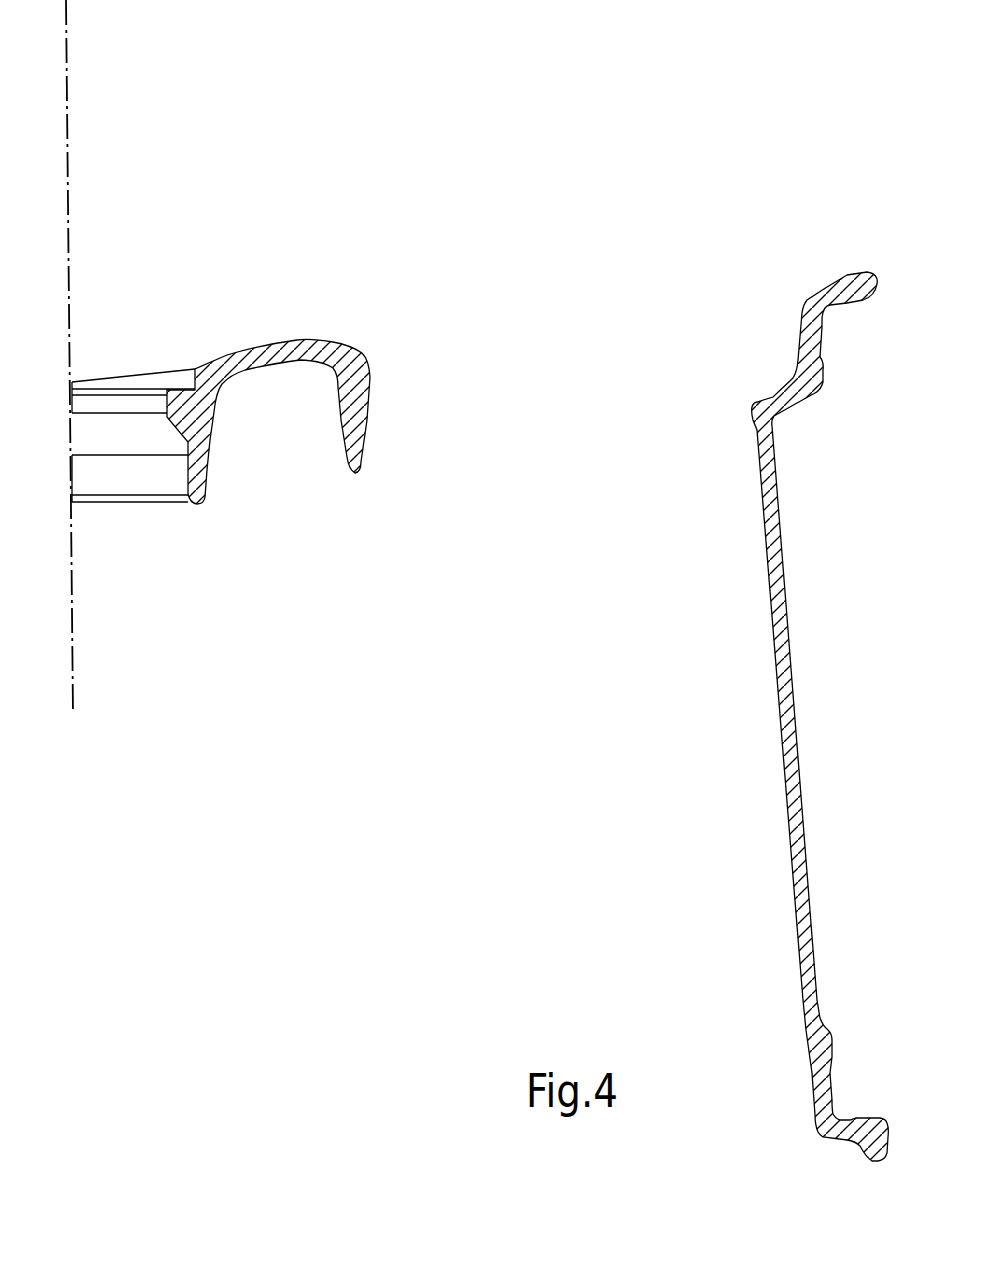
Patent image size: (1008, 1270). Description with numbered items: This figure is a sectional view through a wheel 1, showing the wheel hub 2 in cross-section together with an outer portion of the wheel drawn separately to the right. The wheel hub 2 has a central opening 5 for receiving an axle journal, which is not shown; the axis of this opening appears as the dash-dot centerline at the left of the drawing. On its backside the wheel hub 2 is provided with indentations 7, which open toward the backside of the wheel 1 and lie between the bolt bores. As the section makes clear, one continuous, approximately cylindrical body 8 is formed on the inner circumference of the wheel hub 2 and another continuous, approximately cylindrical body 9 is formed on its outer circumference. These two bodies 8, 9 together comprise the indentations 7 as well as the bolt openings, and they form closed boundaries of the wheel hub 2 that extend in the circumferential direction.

The wheel 1 is at (626, 150).
The wheel hub 2 is at (328, 313).
The central opening 5 is at (132, 482).
The indentations 7 is at (288, 463).
The approximately cylindrical body 8 is at (197, 500).
The approximately cylindrical body 9 is at (352, 462).